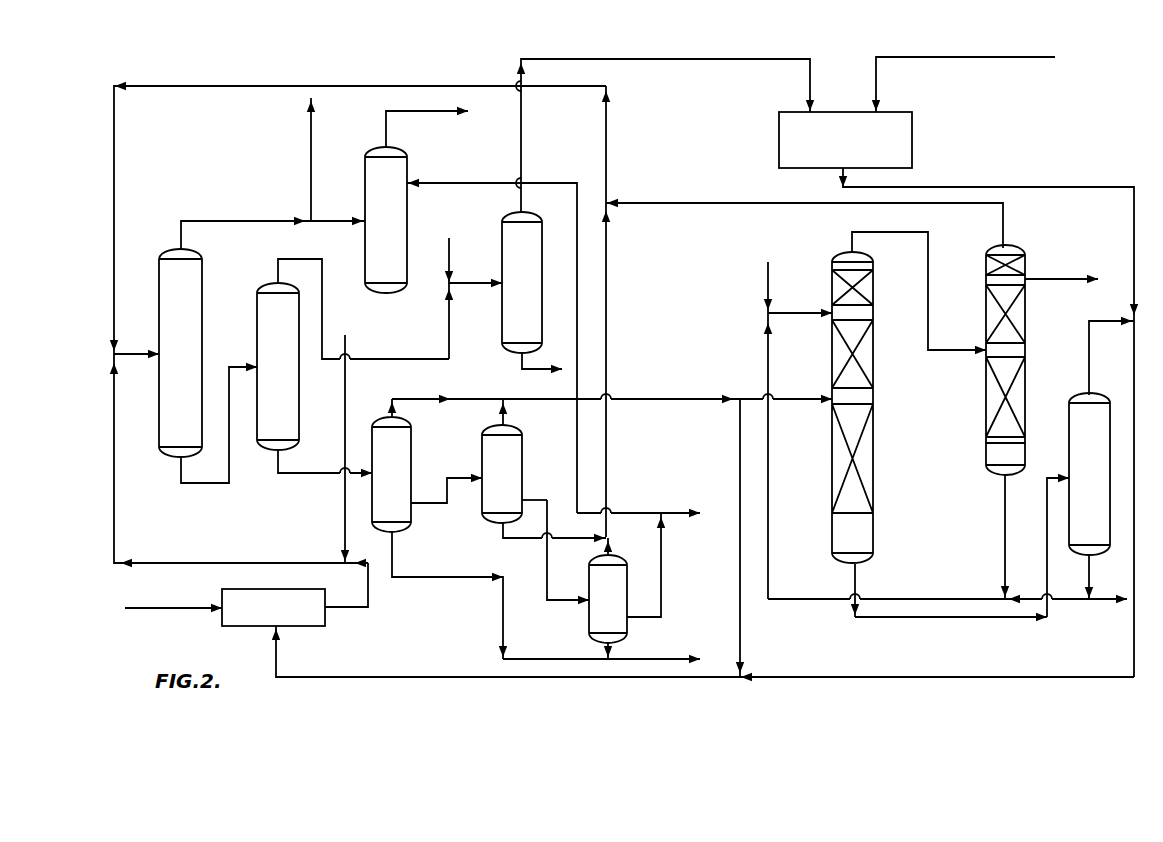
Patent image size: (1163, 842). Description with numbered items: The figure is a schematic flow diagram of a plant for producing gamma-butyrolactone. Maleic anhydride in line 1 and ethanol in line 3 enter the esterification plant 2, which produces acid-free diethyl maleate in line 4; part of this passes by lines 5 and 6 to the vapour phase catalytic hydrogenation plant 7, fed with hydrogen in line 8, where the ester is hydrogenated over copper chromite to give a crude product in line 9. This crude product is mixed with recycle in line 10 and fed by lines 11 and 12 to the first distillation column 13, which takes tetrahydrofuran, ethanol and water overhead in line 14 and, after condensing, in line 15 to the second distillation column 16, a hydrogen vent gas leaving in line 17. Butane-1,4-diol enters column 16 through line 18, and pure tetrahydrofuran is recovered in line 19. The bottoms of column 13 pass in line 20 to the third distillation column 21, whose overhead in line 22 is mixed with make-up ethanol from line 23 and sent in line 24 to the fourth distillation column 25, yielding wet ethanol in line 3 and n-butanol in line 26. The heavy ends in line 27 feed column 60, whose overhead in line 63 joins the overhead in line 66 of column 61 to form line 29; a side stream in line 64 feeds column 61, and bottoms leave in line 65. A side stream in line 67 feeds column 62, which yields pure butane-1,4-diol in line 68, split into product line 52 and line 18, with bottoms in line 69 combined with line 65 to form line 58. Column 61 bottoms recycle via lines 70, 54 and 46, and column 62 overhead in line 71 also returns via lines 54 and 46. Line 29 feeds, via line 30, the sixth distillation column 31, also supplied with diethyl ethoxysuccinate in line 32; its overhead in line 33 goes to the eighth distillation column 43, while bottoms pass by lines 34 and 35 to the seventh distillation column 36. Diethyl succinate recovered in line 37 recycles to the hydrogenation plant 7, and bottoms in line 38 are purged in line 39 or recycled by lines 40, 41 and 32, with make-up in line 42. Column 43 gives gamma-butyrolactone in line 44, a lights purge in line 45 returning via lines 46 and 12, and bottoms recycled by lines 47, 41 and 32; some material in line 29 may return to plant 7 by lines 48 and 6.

The line 1 is at (983, 57).
The esterification plant 2 is at (912, 132).
The line 3 is at (738, 59).
The line 4 is at (840, 172).
The line 5 is at (800, 677).
The line 6 is at (427, 677).
The vapour phase catalytic hydrogenation plant 7 is at (315, 626).
The line 8 is at (177, 610).
The line 9 is at (368, 593).
The line 10 is at (345, 505).
The line 11 is at (114, 511).
The line 12 is at (138, 358).
The first distillation column 13 is at (159, 300).
The line 14 is at (213, 221).
The line 15 is at (329, 220).
The second distillation column 16 is at (407, 216).
The line 17 is at (311, 150).
The line 18 is at (463, 183).
The line 19 is at (426, 113).
The line 20 is at (212, 483).
The third distillation column 21 is at (257, 322).
The line 22 is at (310, 257).
The line 23 is at (452, 243).
The line 24 is at (462, 285).
The fourth distillation column 25 is at (502, 326).
The line 26 is at (526, 374).
The line 27 is at (310, 468).
The line 29 is at (632, 397).
The line 30 is at (793, 380).
The sixth distillation column 31 is at (873, 396).
The line 32 is at (794, 305).
The line 33 is at (893, 233).
The line 34 is at (855, 570).
The line 35 is at (948, 620).
The seventh distillation column 36 is at (1069, 424).
The line 37 is at (1089, 350).
The line 38 is at (1088, 574).
The line 39 is at (1108, 603).
The line 40 is at (1073, 603).
The line 41 is at (930, 598).
The line 42 is at (768, 277).
The eighth distillation column 43 is at (1025, 311).
The line 44 is at (1052, 278).
The line 45 is at (1003, 222).
The line 46 is at (222, 88).
The line 47 is at (1005, 508).
The line 48 is at (740, 537).
The line 52 is at (683, 511).
The line 54 is at (606, 287).
The line 58 is at (640, 659).
The distillation column 60 is at (411, 433).
The distillation column 61 is at (522, 471).
The further distillation column 62 is at (574, 566).
The line 63 is at (428, 398).
The line 64 is at (447, 491).
The line 65 is at (392, 558).
The line 66 is at (509, 418).
The line 67 is at (550, 512).
The line 68 is at (662, 586).
The line 69 is at (608, 645).
The line 70 is at (497, 540).
The line 71 is at (615, 553).